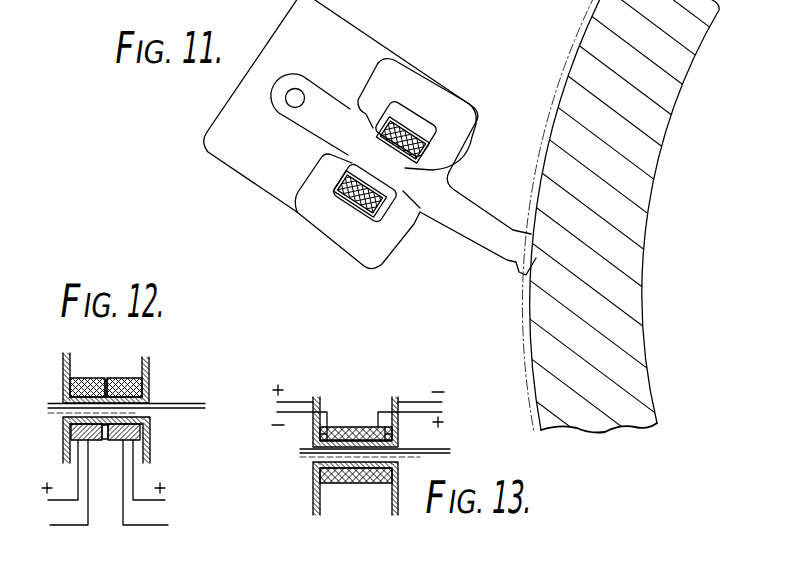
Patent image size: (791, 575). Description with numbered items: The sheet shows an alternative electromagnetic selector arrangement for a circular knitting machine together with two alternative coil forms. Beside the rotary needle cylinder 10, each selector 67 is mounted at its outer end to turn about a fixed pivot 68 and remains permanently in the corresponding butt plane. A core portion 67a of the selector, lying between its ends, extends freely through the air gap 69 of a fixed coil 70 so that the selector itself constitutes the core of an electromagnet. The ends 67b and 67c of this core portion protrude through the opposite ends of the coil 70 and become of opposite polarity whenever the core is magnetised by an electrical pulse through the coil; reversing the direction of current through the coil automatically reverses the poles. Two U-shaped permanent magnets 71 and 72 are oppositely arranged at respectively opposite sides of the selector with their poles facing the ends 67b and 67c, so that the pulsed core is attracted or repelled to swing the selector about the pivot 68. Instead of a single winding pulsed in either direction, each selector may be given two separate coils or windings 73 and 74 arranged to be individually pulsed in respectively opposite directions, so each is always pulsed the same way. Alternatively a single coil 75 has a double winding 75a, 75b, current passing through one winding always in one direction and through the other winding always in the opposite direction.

In FIG. 11, the rotary needle cylinder 10 is at (661, 152).
In FIG. 11, the selector 67 is at (450, 214).
In FIG. 11, the core portion 67a is at (458, 160).
In FIG. 11, the end of core portion 67b is at (343, 138).
In FIG. 11, the end of core portion 67c is at (432, 193).
In FIG. 11, the fixed pivot 68 is at (295, 88).
In FIG. 11, the air gap 69 is at (372, 186).
In FIG. 11, the fixed coil 70 is at (401, 131).
In FIG. 11, the U-shaped permanent magnet 71 is at (405, 75).
In FIG. 11, the U-shaped permanent magnet 72 is at (315, 218).
In FIG. 12, the coil or winding 73 is at (84, 378).
In FIG. 12, the coil or winding 74 is at (124, 378).
In FIG. 13, the single coil 75 is at (344, 427).
In FIG. 13, the winding 75a is at (327, 427).
In FIG. 13, the winding 75b is at (393, 436).